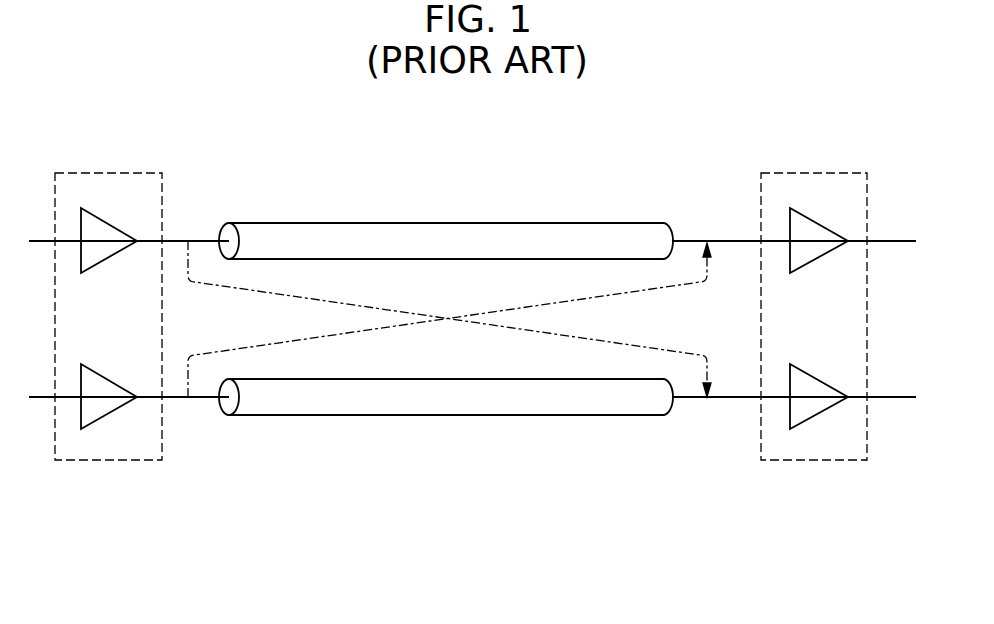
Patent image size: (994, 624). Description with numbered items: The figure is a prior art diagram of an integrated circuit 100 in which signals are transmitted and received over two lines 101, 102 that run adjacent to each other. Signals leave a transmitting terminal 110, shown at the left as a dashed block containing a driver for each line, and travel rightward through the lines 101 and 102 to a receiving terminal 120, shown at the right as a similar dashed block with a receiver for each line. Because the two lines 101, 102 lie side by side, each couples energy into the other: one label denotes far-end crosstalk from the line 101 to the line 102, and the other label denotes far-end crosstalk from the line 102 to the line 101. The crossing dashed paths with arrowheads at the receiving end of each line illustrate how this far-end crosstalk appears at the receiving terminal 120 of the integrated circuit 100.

The integrated circuit 100 is at (844, 126).
The transmitting terminal 110 is at (163, 196).
The receiving terminal 120 is at (761, 202).
The line 101 is at (472, 231).
The line 102 is at (462, 408).